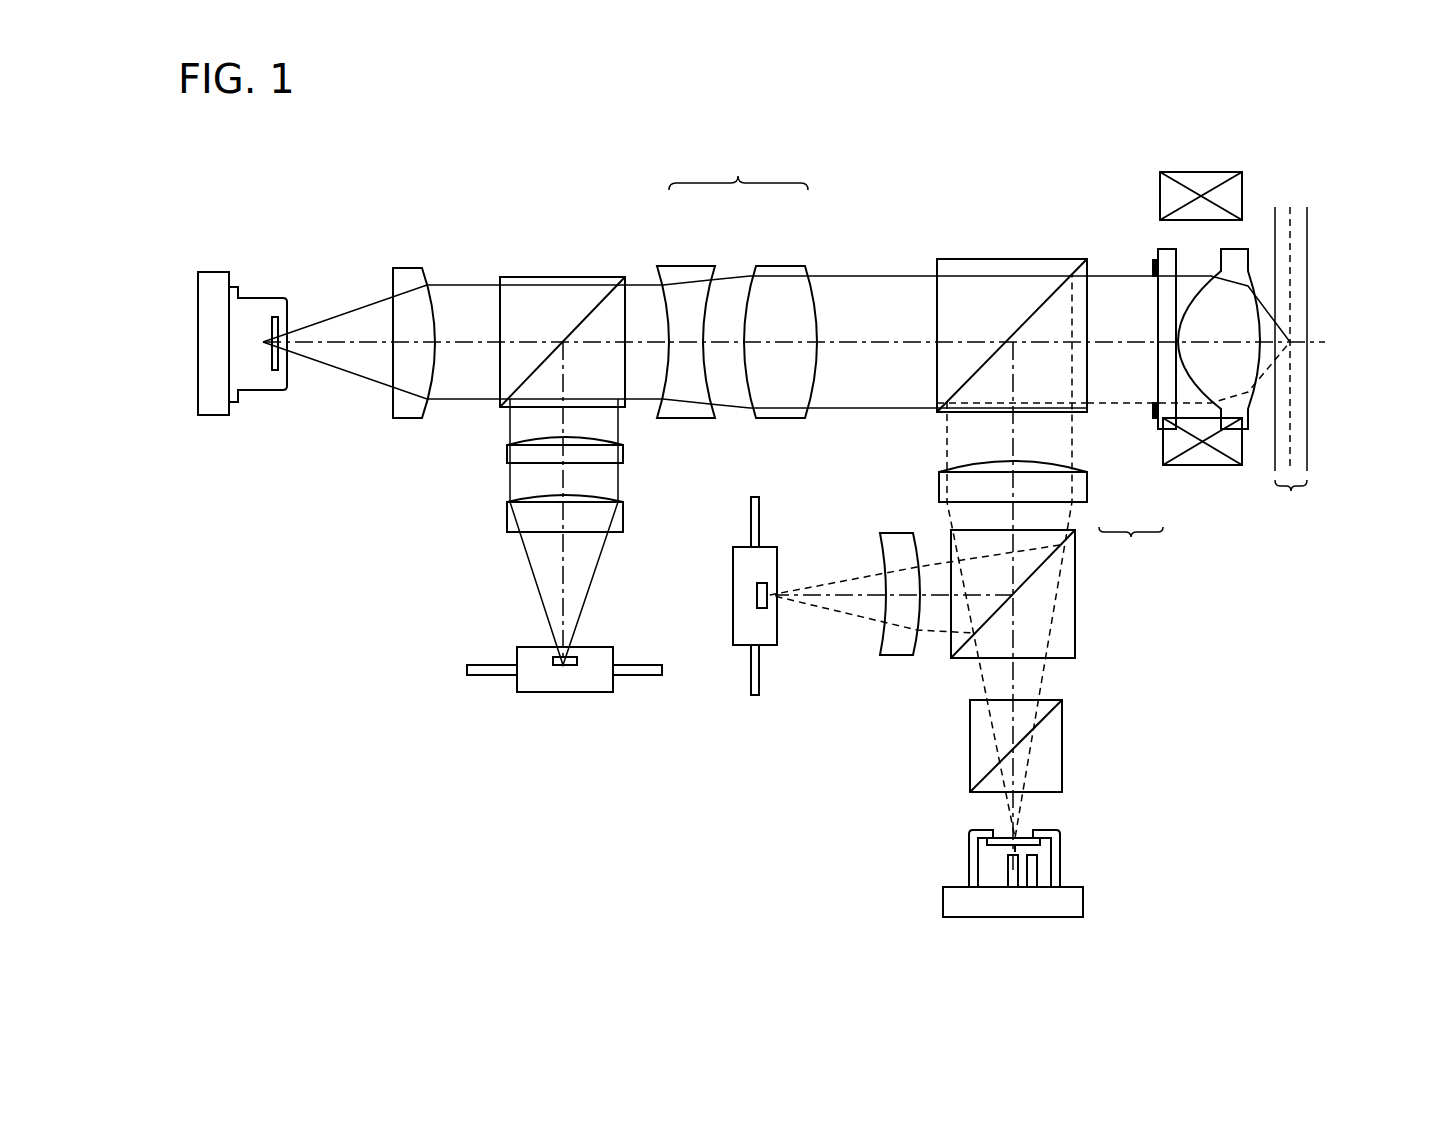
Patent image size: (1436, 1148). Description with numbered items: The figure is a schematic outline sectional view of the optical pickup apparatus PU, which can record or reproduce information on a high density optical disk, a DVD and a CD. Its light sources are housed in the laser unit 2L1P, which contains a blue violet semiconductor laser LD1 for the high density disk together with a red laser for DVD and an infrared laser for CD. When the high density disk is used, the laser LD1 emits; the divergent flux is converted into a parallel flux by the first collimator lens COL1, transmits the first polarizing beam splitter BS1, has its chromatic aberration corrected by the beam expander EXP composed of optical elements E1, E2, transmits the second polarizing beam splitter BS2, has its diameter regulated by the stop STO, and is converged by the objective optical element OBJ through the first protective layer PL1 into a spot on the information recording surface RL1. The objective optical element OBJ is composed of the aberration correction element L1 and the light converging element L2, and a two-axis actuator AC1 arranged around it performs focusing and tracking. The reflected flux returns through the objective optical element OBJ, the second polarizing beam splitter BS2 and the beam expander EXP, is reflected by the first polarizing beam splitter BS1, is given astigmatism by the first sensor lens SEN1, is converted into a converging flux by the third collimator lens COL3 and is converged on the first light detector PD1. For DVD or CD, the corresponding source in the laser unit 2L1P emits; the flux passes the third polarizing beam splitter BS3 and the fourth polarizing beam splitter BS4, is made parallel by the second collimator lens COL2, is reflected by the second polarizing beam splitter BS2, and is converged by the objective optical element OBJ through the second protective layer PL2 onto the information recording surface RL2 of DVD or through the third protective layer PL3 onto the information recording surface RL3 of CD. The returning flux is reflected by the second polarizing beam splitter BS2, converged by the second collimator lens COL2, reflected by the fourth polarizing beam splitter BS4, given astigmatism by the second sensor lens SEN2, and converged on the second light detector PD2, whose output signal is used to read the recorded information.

The optical pickup apparatus PU is at (873, 157).
The blue violet semiconductor laser LD1 is at (213, 415).
The first collimator lens COL1 is at (408, 268).
The first polarizing beam splitter BS1 is at (563, 277).
The first sensor lens SEN1 is at (507, 450).
The third collimator lens COL3 is at (507, 515).
The first light detector PD1 is at (570, 692).
The beam expander EXP is at (737, 283).
The optical element E1 is at (686, 266).
The optical element E2 is at (780, 266).
The second polarizing beam splitter BS2 is at (1012, 259).
The stop STO is at (1152, 268).
The 2-axis actuator AC1 is at (1200, 172).
The objective optical element OBJ is at (1179, 407).
The aberration correction element L1 is at (1167, 429).
The light converging element L2 is at (1237, 429).
The first protective layer PL1 is at (1284, 255).
The information recording surface RL1 is at (1293, 290).
The information recording surface RL3 is at (1307, 359).
The second protective layer PL2 is at (1284, 422).
The information recording surface RL2 is at (1292, 453).
The third protective layer PL3 is at (1328, 362).
The second collimator lens COL2 is at (939, 483).
The fourth polarizing beam splitter BS4 is at (1076, 633).
The second sensor lens SEN2 is at (880, 545).
The second light detector PD2 is at (733, 620).
The third polarizing beam splitter BS3 is at (1062, 762).
The laser unit 2L1P is at (1083, 903).